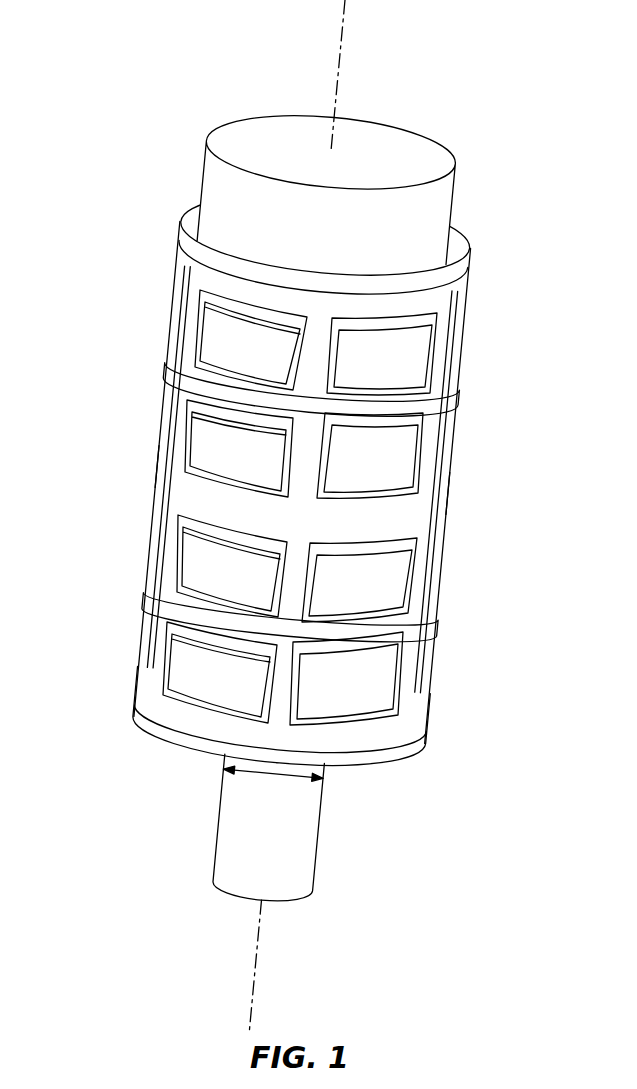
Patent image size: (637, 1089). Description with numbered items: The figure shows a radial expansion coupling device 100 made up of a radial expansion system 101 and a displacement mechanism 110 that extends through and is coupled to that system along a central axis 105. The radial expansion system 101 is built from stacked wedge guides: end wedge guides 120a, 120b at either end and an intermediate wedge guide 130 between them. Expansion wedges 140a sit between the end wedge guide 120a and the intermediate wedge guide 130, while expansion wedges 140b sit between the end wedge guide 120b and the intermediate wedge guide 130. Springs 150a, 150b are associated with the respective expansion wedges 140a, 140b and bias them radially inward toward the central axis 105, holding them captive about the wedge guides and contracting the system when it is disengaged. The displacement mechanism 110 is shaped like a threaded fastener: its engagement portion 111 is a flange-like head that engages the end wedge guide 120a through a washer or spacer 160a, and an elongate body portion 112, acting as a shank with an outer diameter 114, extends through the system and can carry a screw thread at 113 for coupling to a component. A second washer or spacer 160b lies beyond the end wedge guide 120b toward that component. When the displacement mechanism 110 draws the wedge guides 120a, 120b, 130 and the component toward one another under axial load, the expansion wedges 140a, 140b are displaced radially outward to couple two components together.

The radial expansion coupling device 100 is at (273, 515).
The radial expansion system 101 is at (241, 479).
The central axis 105 is at (344, 20).
The displacement mechanism 110 is at (344, 494).
The engagement portion 111 is at (437, 200).
The elongate body portion 112 is at (291, 829).
The screw thread 113 is at (302, 840).
The outer diameter 114 is at (267, 777).
The end wedge guide 120a is at (254, 374).
The end wedge guide 120b is at (235, 620).
The intermediate wedge guide 130 is at (170, 480).
The expansion wedges 140a is at (213, 433).
The expansion wedges 140b is at (197, 562).
The spring 150a is at (190, 372).
The spring 150b is at (180, 600).
The washer or spacer 160a is at (190, 222).
The washer or spacer 160b is at (168, 730).